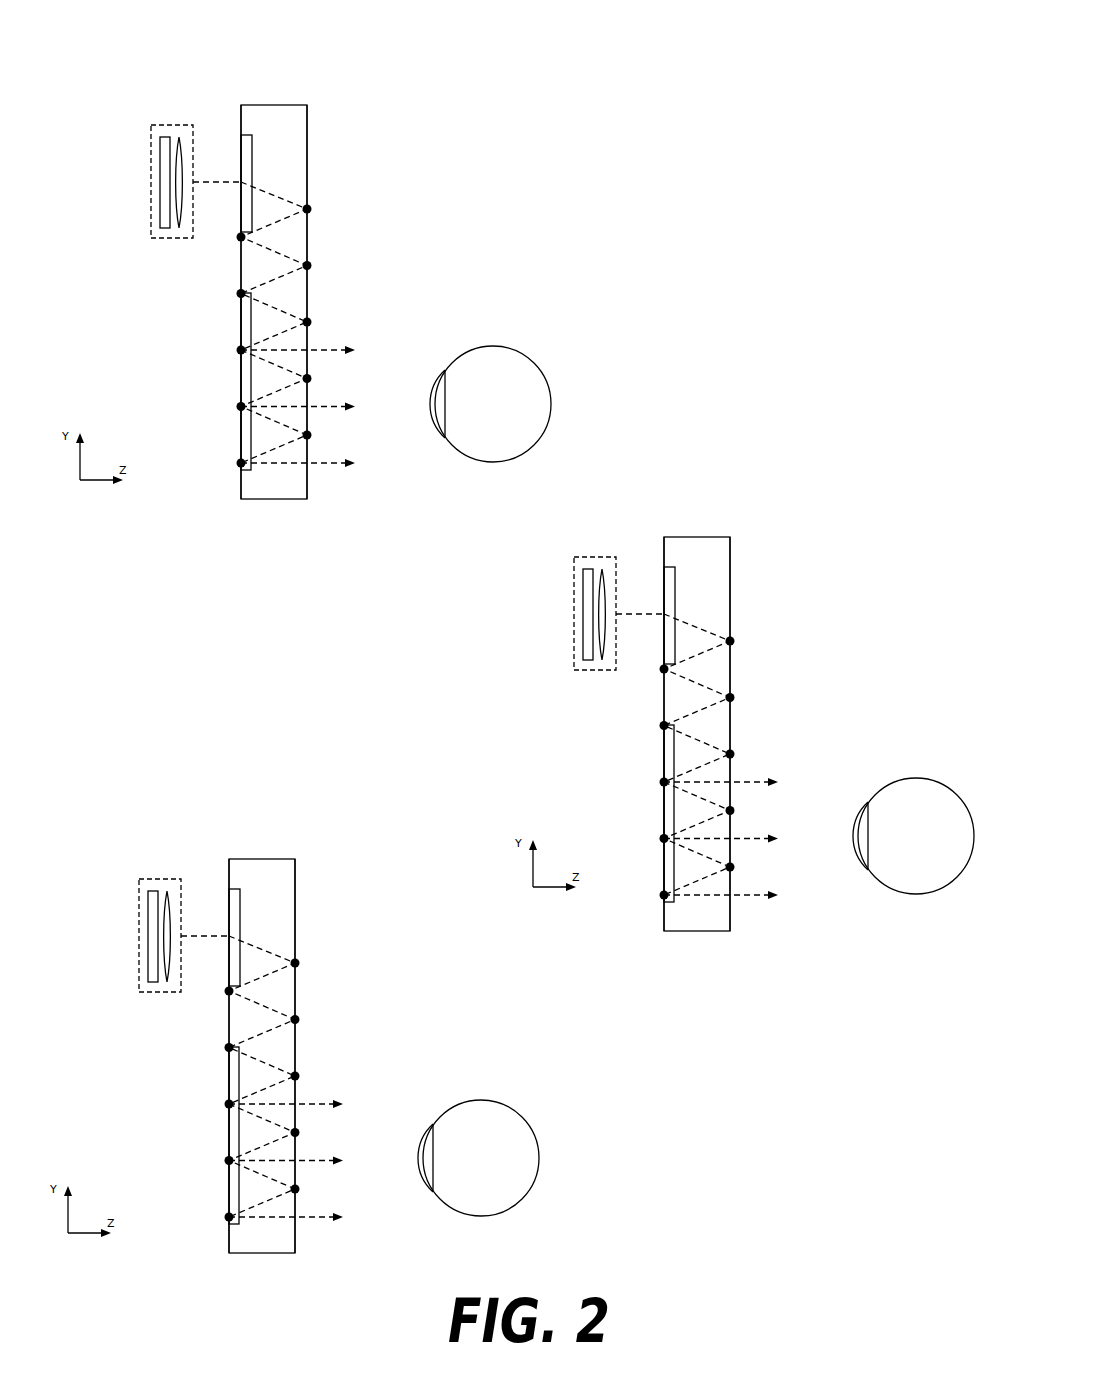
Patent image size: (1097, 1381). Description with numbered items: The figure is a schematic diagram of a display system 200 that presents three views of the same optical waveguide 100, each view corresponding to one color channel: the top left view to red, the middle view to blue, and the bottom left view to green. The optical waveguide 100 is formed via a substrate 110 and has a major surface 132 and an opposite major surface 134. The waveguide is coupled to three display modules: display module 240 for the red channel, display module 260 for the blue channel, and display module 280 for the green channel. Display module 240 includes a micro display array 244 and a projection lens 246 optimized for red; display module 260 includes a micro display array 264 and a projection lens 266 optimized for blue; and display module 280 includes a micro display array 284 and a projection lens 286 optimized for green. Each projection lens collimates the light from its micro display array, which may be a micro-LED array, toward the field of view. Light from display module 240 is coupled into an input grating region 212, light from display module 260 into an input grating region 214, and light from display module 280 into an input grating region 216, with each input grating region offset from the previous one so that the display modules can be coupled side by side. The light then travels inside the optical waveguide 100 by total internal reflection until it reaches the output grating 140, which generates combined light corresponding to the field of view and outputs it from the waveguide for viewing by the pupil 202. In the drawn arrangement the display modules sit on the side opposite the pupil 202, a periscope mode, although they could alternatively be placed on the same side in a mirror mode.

The optical waveguide 100 is at (312, 65).
The substrate 110 is at (271, 115).
The major surface 132 is at (241, 112).
The second surface of waveguide 134 is at (308, 118).
The output grating 140 is at (241, 448).
The display system 200 is at (733, 1123).
The pupil 202 is at (490, 358).
The input grating region 212 is at (241, 148).
The input grating region 214 is at (632, 589).
The input grating region 216 is at (197, 911).
The display module 240 is at (151, 158).
The micro display array 244 is at (166, 238).
The projection lens 246 is at (184, 230).
The display module 260 is at (558, 592).
The micro display array 264 is at (572, 661).
The projection lens 266 is at (621, 661).
The display module 280 is at (123, 914).
The micro display array 284 is at (137, 983).
The projection lens 286 is at (186, 983).